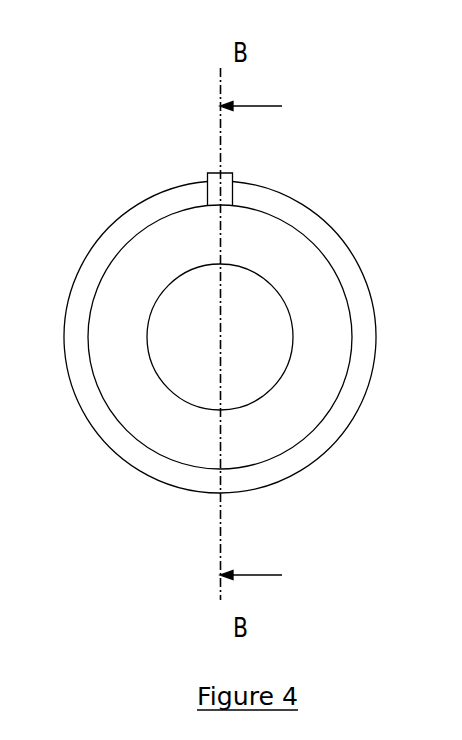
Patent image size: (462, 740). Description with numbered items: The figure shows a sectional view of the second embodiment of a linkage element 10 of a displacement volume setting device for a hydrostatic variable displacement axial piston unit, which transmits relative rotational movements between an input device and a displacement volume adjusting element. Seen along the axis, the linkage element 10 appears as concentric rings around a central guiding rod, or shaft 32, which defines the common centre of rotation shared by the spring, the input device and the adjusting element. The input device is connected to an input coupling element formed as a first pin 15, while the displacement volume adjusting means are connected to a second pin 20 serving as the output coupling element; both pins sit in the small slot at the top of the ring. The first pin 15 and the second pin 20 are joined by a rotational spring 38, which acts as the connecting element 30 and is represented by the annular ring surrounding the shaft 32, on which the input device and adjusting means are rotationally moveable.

The linkage element 10 is at (352, 103).
The first pin 15 is at (166, 162).
The second pin 20 is at (212, 182).
The connecting element 30 is at (256, 320).
The rotational spring 38 is at (293, 213).
The guiding rod (shaft) 32 is at (271, 325).